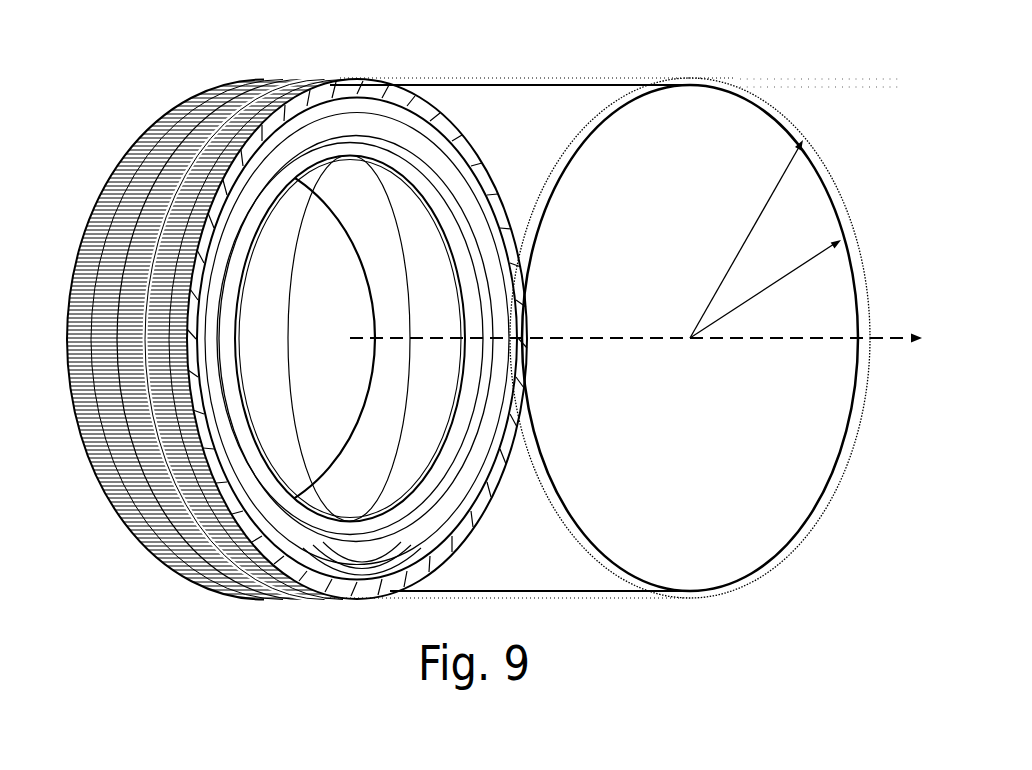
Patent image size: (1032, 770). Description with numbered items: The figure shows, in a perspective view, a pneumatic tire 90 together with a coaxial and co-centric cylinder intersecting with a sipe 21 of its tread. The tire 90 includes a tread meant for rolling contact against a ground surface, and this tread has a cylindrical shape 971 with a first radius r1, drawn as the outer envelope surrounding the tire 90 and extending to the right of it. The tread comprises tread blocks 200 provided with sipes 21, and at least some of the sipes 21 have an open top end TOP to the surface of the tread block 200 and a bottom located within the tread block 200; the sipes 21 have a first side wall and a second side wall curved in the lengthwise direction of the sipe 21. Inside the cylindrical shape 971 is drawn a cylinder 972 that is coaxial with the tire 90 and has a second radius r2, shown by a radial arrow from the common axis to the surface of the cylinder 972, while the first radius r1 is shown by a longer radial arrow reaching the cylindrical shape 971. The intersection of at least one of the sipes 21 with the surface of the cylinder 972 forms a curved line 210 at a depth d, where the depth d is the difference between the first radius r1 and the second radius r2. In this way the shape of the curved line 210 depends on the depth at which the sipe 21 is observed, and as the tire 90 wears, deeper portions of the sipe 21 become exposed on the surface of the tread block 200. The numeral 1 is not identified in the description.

The pneumatic tire 90 is at (168, 97).
The tire 1 is at (107, 203).
The tread blocks 200 is at (73, 281).
The sipes 21 is at (163, 557).
The curved line 210 is at (170, 540).
The cylindrical shape 971 is at (546, 70).
The cylinder 972 is at (581, 159).
The first radius r1 is at (746, 239).
The second radius r2 is at (765, 289).
The depth d is at (835, 83).
The open top end TOP is at (133, 153).